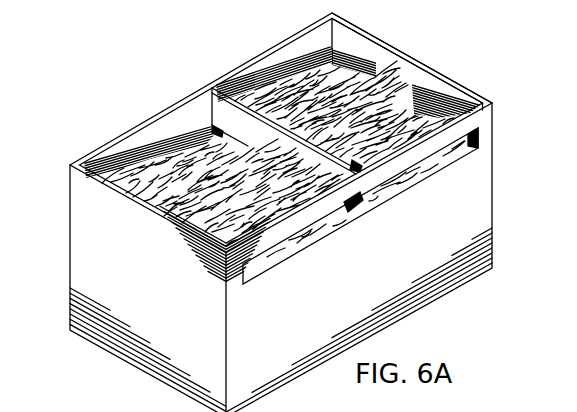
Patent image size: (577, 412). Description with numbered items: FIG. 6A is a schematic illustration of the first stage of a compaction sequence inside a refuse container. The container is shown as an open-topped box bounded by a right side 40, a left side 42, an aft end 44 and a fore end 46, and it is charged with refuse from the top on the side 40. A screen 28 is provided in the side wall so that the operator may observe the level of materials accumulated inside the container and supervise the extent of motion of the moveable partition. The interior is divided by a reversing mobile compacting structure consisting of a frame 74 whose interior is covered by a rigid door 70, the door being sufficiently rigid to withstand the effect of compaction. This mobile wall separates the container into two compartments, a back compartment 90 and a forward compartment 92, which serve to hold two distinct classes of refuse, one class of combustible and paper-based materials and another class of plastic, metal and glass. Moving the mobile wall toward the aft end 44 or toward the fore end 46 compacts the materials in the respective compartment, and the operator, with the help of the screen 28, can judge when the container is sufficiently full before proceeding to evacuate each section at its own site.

The screen 28 is at (490, 132).
The right side 40 is at (474, 212).
The left side 42 is at (294, 50).
The aft end 44 is at (78, 203).
The fore end 46 is at (410, 77).
The door 70 is at (224, 105).
The frame 74 is at (214, 91).
The back compartment 90 is at (188, 157).
The forward compartment 92 is at (351, 90).